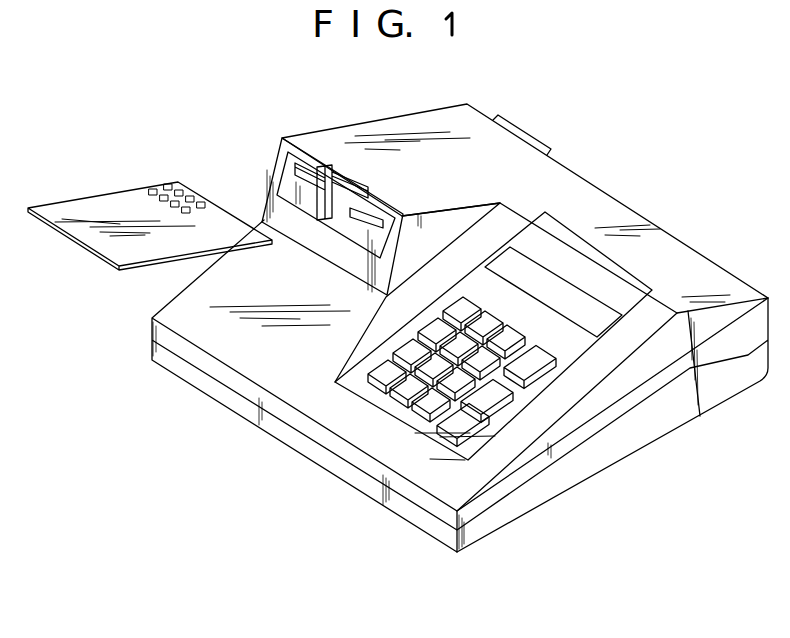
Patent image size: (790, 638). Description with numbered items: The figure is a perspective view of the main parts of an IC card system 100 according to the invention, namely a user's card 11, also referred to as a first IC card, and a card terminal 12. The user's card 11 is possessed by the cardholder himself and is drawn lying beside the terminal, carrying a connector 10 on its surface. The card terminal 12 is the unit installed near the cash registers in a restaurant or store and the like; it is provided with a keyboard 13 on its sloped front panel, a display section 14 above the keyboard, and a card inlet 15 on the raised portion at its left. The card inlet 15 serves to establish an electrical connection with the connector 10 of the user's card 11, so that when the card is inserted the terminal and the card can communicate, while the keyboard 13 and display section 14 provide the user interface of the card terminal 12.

The IC card system 100 is at (605, 108).
The connector 10 is at (190, 192).
The user's card 11 is at (117, 203).
The card terminal 12 is at (417, 127).
The keyboard 13 is at (397, 407).
The display section 14 is at (605, 316).
The card inlet 15 is at (312, 172).